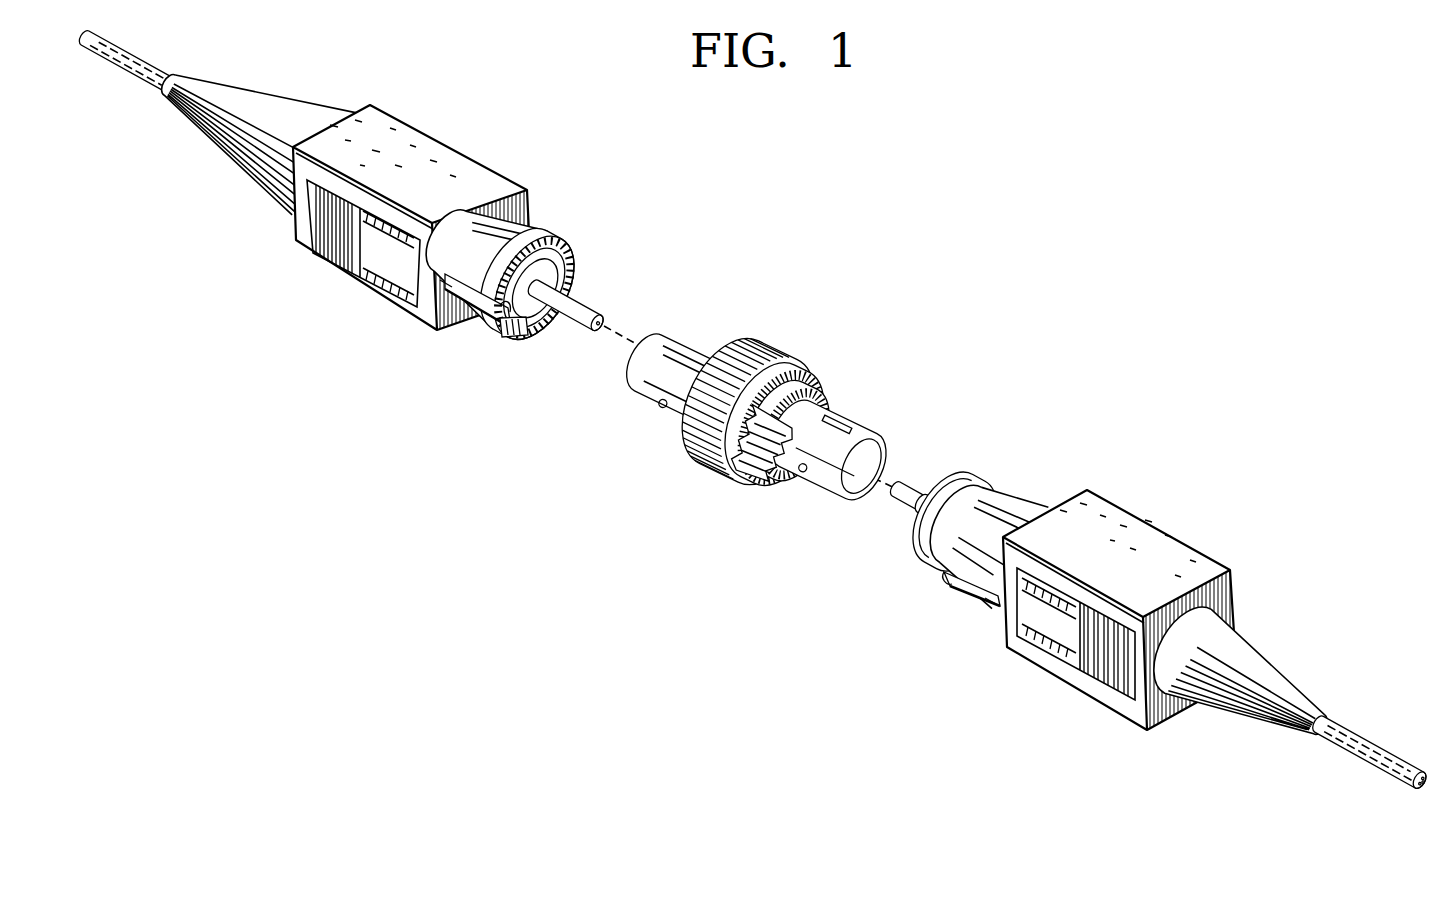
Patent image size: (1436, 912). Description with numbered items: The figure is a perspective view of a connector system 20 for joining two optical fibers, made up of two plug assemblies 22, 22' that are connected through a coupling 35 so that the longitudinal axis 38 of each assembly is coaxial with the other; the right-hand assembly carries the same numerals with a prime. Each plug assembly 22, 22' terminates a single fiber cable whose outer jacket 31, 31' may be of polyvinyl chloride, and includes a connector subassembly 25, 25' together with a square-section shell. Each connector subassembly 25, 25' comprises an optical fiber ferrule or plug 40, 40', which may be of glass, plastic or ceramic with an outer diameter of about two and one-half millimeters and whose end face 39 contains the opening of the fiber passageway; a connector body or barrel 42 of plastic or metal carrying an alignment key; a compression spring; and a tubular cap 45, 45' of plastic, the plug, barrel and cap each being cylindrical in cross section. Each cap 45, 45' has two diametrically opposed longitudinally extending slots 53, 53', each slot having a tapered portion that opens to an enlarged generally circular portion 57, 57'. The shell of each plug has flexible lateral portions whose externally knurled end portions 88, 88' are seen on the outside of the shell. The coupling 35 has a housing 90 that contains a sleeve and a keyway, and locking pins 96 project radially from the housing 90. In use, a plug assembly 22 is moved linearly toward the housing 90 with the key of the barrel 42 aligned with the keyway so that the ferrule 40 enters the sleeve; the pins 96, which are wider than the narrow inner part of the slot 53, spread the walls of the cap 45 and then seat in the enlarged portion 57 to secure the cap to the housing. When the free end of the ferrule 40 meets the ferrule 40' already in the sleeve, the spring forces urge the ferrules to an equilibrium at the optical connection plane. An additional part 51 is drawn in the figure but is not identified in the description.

The connector system 20 is at (935, 284).
The plug assembly 22 is at (412, 205).
The plug assembly 22' is at (1120, 606).
The connector subassembly 25 is at (248, 133).
The connector subassembly 25' is at (1244, 707).
The outer jacket 31 is at (117, 86).
The outer jacket 31' is at (1369, 726).
The coupling 35 is at (757, 340).
The longitudinal axis 38 is at (691, 351).
The end face 39 is at (601, 332).
The optical fiber ferrule or plug 40 is at (582, 284).
The ferrule 40' is at (933, 476).
The connector body or barrel 42 is at (573, 332).
The tubular cap 45 is at (498, 258).
The tubular cap 45' is at (990, 519).
The latch tab 51 is at (543, 337).
The slot 53 is at (478, 348).
The slot 53' is at (936, 595).
The enlarged generally circular portion 57 is at (450, 341).
The enlarged generally circular portion 57' is at (954, 641).
The externally knurled end portion 88 is at (312, 274).
The externally knurled end portion 88' is at (1088, 683).
The housing 90 is at (747, 465).
The pins 96 is at (807, 550).